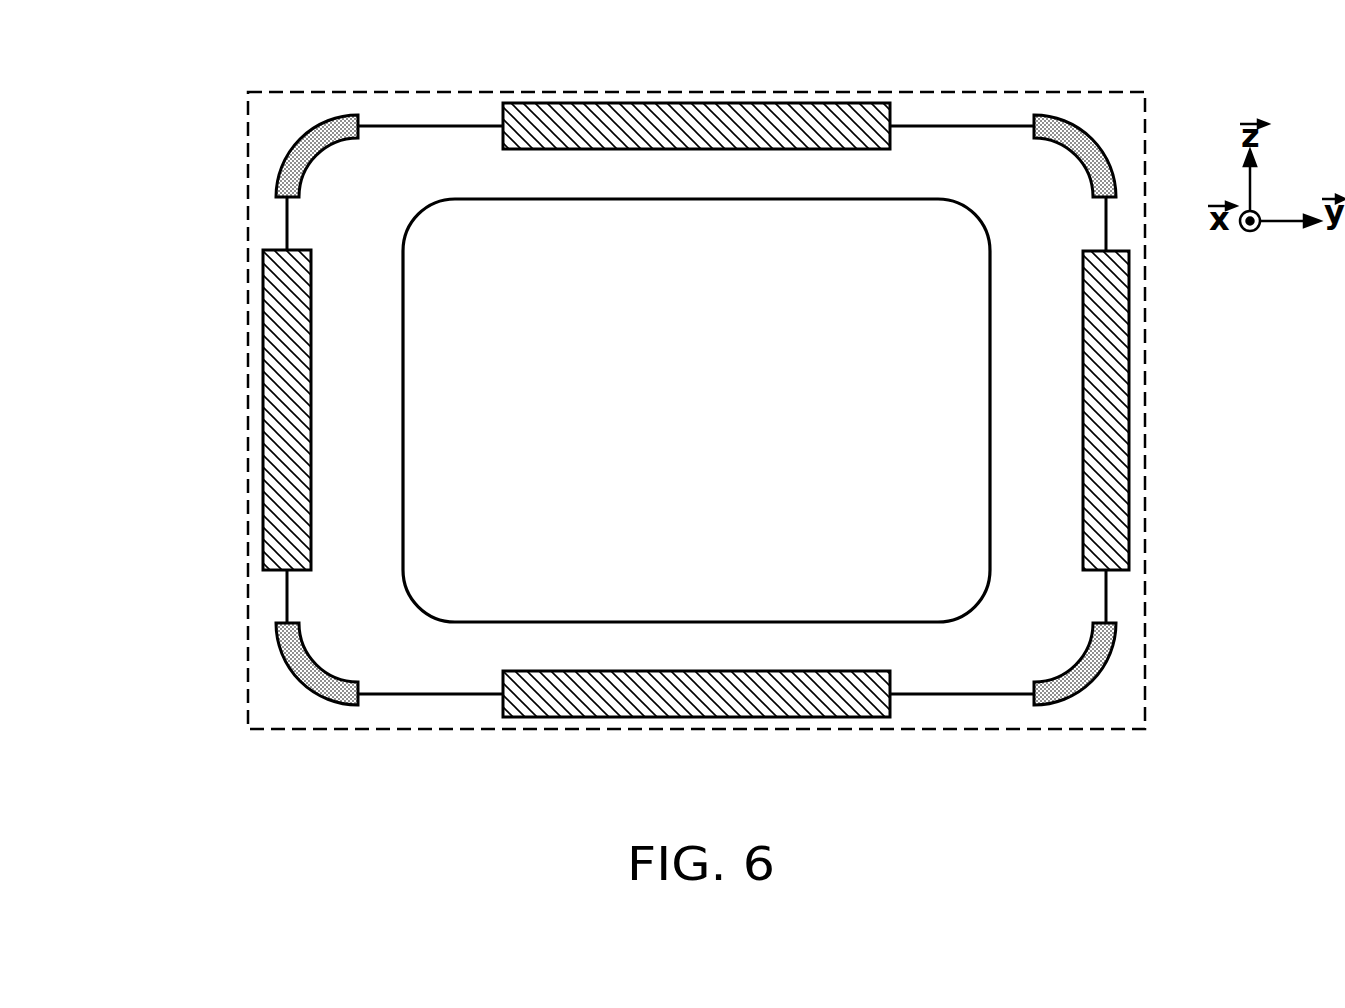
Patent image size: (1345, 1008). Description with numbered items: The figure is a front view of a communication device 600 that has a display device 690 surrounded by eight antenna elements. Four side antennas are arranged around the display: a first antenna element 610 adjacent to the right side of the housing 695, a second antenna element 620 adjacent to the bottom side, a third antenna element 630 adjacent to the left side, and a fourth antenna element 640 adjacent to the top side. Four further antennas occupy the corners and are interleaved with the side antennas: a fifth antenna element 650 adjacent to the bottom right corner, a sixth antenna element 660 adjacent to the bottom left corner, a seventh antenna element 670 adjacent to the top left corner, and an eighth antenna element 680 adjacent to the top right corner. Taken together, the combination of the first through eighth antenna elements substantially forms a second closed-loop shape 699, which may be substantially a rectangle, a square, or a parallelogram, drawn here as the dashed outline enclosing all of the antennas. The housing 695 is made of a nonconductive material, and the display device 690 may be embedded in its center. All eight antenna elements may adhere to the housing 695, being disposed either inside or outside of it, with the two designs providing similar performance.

The communication device 600 is at (173, 92).
The first antenna element 610 is at (1124, 457).
The second antenna element 620 is at (728, 707).
The third antenna element 630 is at (272, 463).
The fourth antenna element 640 is at (697, 116).
The fifth antenna element 650 is at (1076, 660).
The sixth antenna element 660 is at (316, 660).
The seventh antenna element 670 is at (318, 156).
The eighth antenna element 680 is at (1074, 156).
The display device 690 is at (920, 199).
The housing 695 is at (960, 125).
The second closed-loop shape 699 is at (1104, 92).